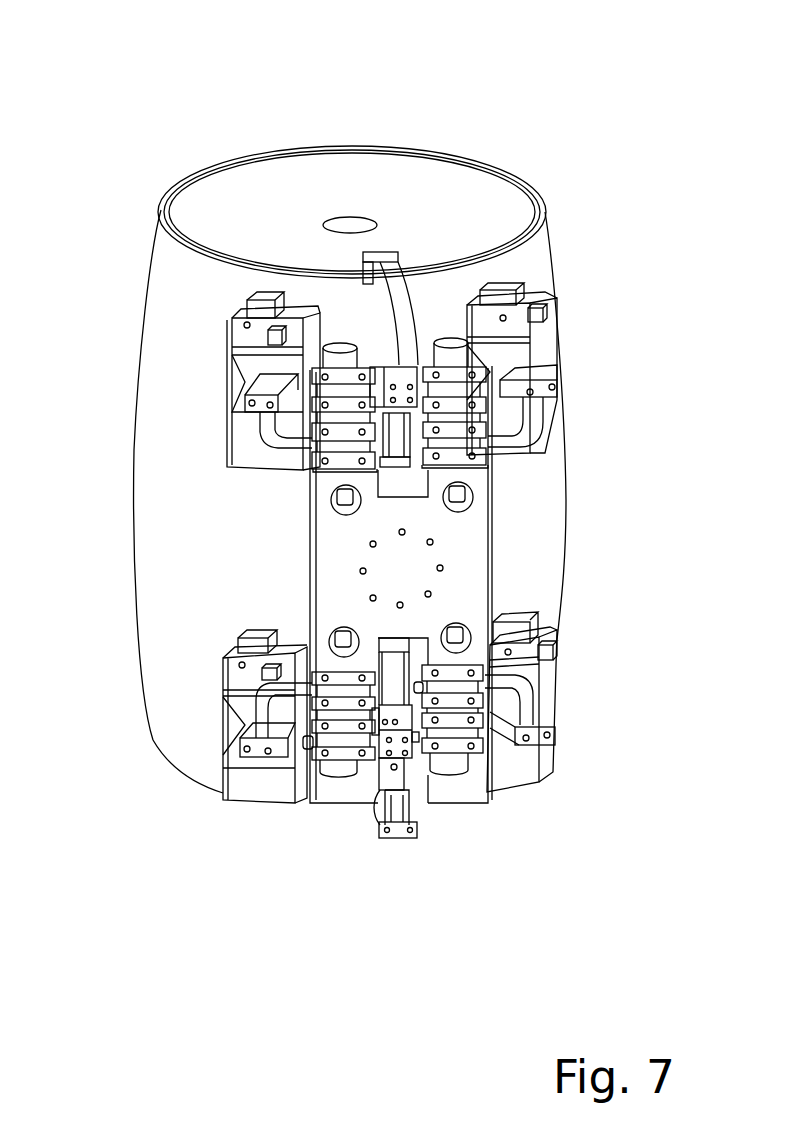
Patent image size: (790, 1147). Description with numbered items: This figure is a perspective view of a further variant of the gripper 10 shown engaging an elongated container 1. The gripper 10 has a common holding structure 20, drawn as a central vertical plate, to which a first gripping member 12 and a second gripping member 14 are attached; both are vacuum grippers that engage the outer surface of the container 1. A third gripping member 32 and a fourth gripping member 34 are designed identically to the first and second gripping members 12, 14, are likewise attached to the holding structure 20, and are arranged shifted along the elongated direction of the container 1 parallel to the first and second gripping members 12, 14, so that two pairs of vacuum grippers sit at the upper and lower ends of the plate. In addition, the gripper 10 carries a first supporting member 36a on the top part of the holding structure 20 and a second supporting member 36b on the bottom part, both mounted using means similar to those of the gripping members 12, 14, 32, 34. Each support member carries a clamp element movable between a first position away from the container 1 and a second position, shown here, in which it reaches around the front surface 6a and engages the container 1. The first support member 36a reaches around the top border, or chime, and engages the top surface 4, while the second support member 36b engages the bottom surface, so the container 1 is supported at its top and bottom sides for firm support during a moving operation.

The elongated container 1 is at (402, 107).
The top surface 4 is at (450, 195).
The front surface 6a is at (168, 503).
The gripper 10 is at (528, 528).
The first gripping member 12 is at (254, 831).
The second gripping member 14 is at (516, 821).
The common holding structure 20 is at (287, 545).
The third gripping member 32 is at (205, 355).
The fourth gripping member 34 is at (568, 362).
The first support member 36a is at (431, 288).
The second support member 36b is at (346, 834).